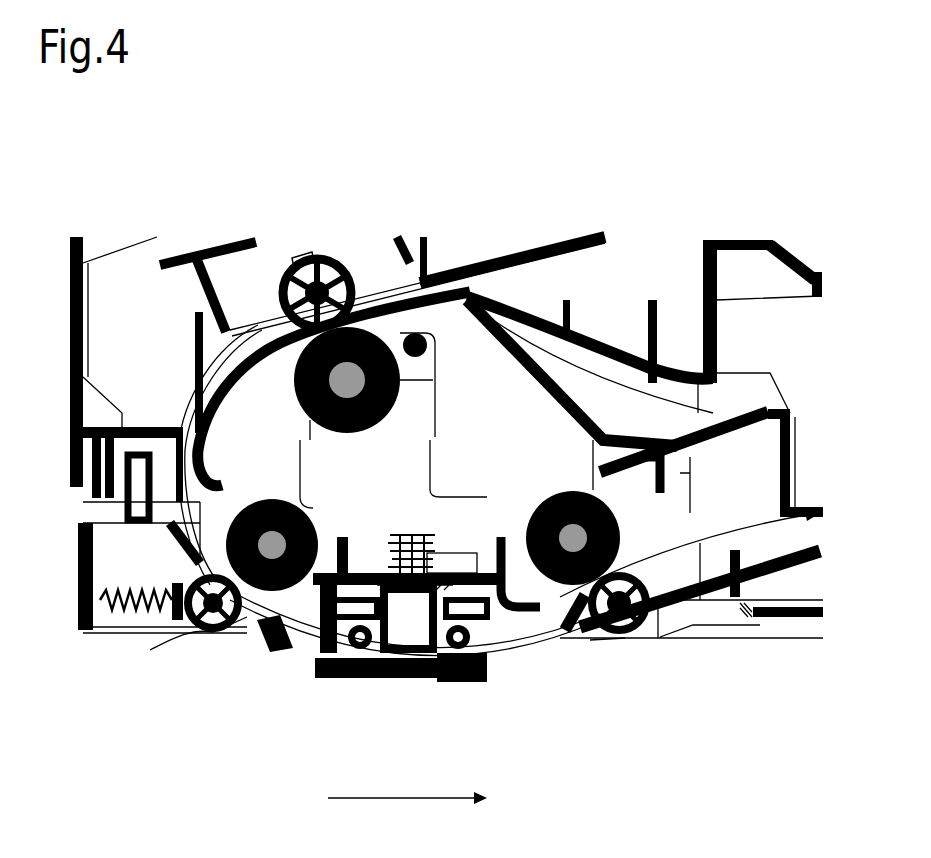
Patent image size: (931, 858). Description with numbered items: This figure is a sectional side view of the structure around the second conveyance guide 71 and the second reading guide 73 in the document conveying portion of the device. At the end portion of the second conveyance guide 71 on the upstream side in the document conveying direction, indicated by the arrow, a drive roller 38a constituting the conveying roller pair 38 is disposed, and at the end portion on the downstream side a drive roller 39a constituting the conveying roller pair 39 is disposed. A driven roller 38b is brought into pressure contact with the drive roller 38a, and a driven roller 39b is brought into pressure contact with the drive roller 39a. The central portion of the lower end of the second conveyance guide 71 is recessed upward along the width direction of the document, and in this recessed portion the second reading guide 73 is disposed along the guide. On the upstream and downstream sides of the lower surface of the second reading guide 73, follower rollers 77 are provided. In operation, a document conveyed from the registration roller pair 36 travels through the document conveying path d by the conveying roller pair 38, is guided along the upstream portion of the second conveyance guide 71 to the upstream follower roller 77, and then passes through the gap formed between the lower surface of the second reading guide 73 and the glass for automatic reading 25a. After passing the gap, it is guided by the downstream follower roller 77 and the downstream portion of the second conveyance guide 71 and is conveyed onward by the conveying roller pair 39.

The document conveying path d is at (187, 417).
The registration roller pair 36 is at (396, 407).
The conveying roller pair 38 is at (187, 630).
The drive roller 38a is at (300, 508).
The driven roller 38b is at (203, 630).
The conveying roller pair 39 is at (603, 637).
The drive roller 39a is at (565, 492).
The driven roller 39b is at (617, 637).
The second conveyance guide 71 is at (450, 573).
The second reading guide 73 is at (383, 678).
The follower roller 77 is at (310, 653).
The glass for automatic reading 25a is at (347, 677).